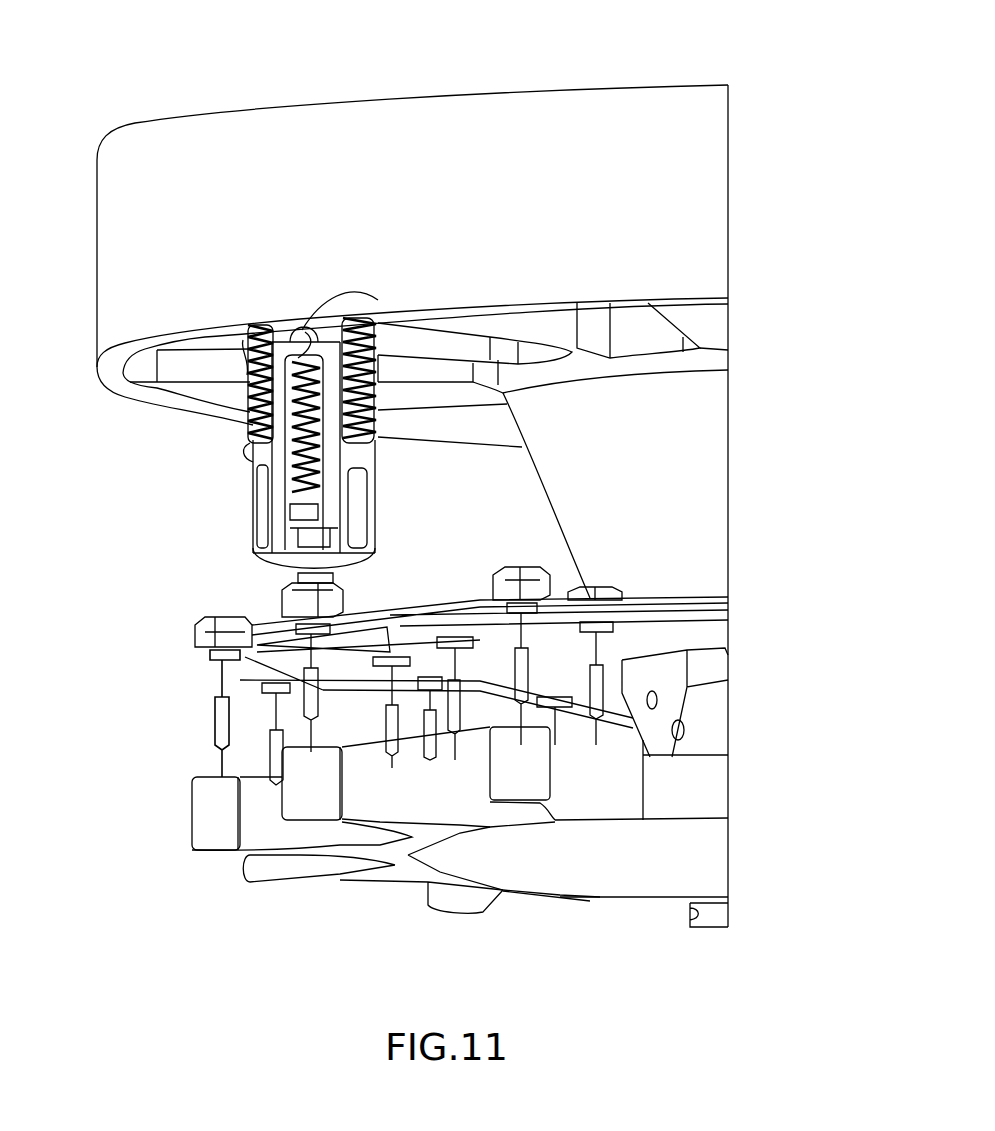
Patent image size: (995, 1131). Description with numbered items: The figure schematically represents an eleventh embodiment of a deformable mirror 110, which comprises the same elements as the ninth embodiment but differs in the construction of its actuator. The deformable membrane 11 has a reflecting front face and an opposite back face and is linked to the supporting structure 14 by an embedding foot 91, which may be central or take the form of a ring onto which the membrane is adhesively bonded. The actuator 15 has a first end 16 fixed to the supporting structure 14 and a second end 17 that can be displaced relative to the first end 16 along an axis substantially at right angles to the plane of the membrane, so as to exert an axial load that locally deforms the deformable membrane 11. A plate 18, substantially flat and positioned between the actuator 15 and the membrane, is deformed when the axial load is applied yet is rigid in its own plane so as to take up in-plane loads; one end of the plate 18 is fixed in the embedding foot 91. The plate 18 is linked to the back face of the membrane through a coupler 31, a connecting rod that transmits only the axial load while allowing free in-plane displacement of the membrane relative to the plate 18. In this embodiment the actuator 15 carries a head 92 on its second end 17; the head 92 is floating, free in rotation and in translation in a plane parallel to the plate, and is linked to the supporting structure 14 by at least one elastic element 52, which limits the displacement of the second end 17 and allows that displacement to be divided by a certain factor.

The deformable mirror 110 is at (196, 77).
The supporting structure 14 is at (555, 110).
The embedding foot 91 is at (710, 500).
The first end 16 is at (303, 316).
The actuator 15 is at (287, 365).
The head 92 is at (248, 472).
The elastic element 52 is at (292, 472).
The second end 17 is at (305, 547).
The plate 18 is at (272, 622).
The coupler 31 is at (205, 713).
The deformable membrane 11 is at (727, 805).